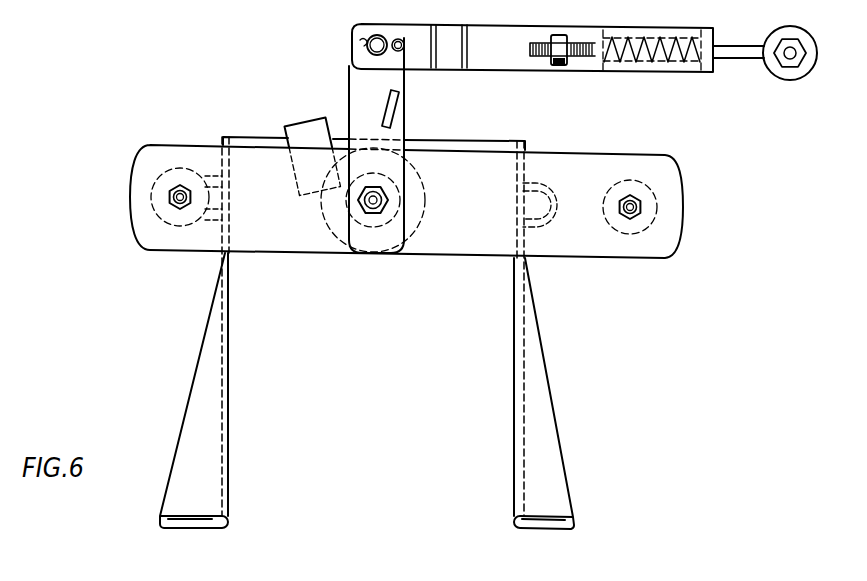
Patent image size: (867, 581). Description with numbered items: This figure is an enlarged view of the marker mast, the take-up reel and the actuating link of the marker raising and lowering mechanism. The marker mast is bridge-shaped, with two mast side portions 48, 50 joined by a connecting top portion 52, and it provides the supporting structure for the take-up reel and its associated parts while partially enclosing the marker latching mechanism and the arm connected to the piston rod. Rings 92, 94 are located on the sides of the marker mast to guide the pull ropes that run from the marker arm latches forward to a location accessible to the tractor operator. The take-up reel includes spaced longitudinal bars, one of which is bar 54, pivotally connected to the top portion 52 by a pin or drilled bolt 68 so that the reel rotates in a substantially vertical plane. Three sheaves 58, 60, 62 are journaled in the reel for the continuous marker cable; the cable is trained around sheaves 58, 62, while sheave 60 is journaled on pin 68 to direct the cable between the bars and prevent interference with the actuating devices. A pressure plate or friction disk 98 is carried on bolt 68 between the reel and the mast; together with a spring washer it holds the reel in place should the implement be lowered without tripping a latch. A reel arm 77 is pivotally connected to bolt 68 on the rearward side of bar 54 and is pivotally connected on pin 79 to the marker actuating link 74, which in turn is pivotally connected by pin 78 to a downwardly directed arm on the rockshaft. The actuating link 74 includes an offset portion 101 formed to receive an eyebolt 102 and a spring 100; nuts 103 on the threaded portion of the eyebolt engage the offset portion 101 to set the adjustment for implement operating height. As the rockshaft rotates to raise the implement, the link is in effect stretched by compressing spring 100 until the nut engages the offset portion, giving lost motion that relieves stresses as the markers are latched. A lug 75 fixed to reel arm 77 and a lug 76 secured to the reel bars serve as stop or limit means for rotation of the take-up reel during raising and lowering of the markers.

The mast side portion 48 is at (556, 421).
The mast side portion 50 is at (185, 418).
The connecting top portion 52 is at (490, 141).
The longitudinal bar 54 is at (494, 229).
The sheave 58 is at (607, 192).
The sheave 60 is at (152, 192).
The sheave 62 is at (390, 185).
The pin or drilled bolt 68 is at (388, 201).
The marker actuating link 74 is at (494, 80).
The lug 75 is at (395, 105).
The lug 76 is at (298, 128).
The reel arm 77 is at (350, 94).
The pin 78 is at (793, 78).
The pin 79 is at (369, 50).
The ring 92 is at (558, 200).
The ring 94 is at (212, 172).
The pressure plate or friction disk 98 is at (326, 222).
The spring 100 is at (653, 71).
The offset portion 101 is at (635, 71).
The eyebolt 102 is at (735, 61).
The nuts 103 is at (556, 72).